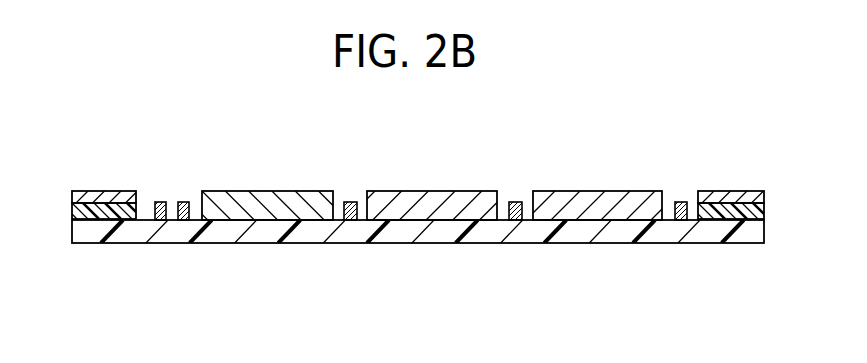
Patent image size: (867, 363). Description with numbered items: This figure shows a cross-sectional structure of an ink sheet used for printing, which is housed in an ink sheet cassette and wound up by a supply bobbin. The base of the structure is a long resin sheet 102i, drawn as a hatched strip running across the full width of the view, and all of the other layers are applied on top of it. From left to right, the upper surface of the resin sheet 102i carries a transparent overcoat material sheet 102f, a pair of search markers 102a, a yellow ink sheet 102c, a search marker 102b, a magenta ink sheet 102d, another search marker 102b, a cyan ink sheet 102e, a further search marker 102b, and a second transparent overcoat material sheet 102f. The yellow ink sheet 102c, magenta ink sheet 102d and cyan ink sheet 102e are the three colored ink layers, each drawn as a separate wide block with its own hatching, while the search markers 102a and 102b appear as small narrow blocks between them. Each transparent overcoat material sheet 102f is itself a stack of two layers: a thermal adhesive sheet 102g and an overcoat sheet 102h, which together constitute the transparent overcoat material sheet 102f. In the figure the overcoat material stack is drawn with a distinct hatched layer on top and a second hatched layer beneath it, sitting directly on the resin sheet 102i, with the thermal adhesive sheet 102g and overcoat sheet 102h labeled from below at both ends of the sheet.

The search marker 102a is at (172, 208).
The search marker 102b is at (678, 197).
The yellow ink sheet 102c is at (273, 198).
The magenta ink sheet 102d is at (438, 198).
The cyan ink sheet 102e is at (603, 193).
The transparent overcoat material sheet 102f is at (733, 195).
The thermal adhesive sheet 102g is at (737, 197).
The overcoat sheet 102h is at (716, 216).
The resin sheet 102i is at (445, 235).